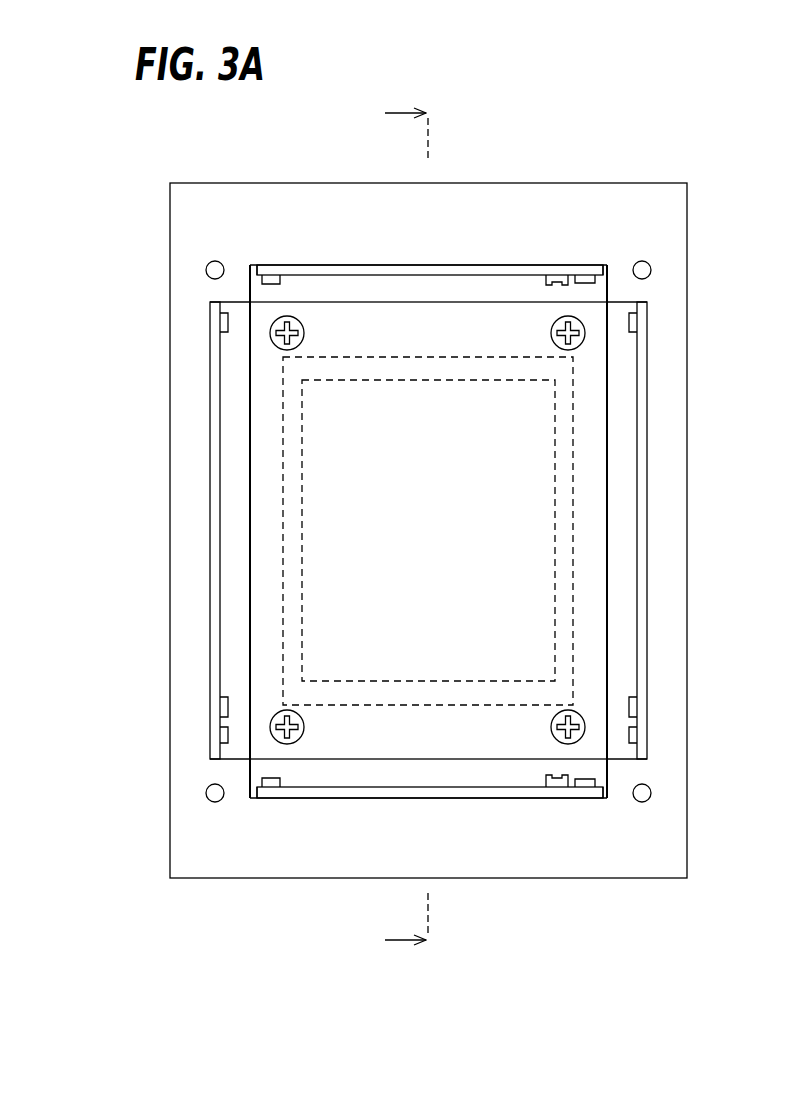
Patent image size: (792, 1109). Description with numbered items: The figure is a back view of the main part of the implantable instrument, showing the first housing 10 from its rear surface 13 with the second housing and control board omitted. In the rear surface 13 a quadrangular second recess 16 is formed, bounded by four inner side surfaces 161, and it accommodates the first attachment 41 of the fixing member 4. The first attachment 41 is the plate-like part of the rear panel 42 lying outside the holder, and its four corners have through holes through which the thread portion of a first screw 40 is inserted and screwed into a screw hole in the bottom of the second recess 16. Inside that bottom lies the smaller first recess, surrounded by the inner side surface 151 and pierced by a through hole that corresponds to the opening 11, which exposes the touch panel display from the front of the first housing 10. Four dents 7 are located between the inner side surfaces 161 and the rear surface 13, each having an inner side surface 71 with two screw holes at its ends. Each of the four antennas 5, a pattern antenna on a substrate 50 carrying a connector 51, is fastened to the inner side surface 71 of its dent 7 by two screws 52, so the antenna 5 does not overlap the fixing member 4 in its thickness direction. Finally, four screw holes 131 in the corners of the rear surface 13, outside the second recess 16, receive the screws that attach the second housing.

The first housing 10 is at (696, 170).
The rear surface 13 is at (220, 215).
The screw holes 131 is at (205, 266).
The second recess 16 is at (266, 502).
The inner side surfaces 161 is at (437, 316).
The fixing member 4 is at (381, 300).
The antennas 5 is at (328, 278).
The dents 7 is at (427, 527).
The substrate 50 is at (347, 270).
The connector 51 is at (559, 288).
The screws 52 is at (285, 283).
The inner side surface 71 is at (603, 268).
The first screw 40 is at (293, 350).
The first attachment 41 is at (402, 335).
The rear panel 42 is at (515, 527).
The opening 11 is at (555, 572).
The inner side surface 151 is at (445, 360).